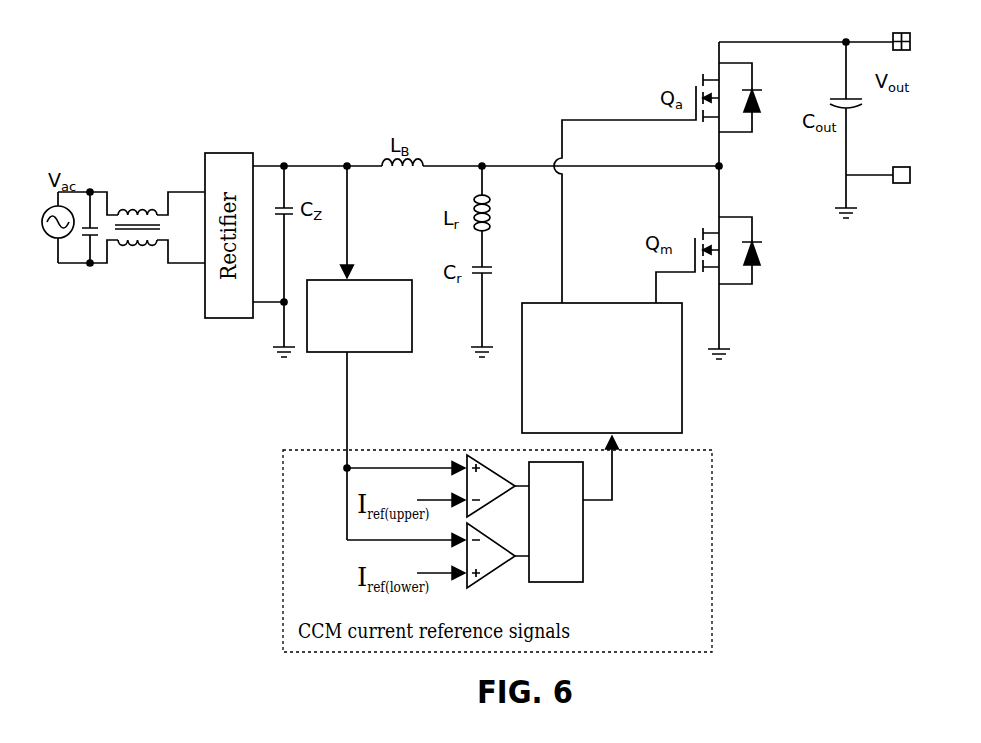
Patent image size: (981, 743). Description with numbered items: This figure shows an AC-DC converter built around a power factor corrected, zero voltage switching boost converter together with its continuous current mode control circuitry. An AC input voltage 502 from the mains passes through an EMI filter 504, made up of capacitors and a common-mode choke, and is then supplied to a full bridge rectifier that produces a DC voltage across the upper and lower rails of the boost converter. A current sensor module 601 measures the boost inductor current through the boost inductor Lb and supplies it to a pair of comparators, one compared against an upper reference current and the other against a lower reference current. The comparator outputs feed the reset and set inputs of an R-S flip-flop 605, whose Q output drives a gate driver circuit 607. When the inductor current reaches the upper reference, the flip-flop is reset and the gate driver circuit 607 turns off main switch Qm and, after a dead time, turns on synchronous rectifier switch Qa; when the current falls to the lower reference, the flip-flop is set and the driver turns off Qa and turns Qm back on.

The AC input voltage 502 is at (50, 240).
The EMI filter 504 is at (132, 248).
The current sensor module 601 is at (318, 352).
The R-S flip-flop 605 is at (585, 568).
The gate driver circuit 607 is at (682, 388).